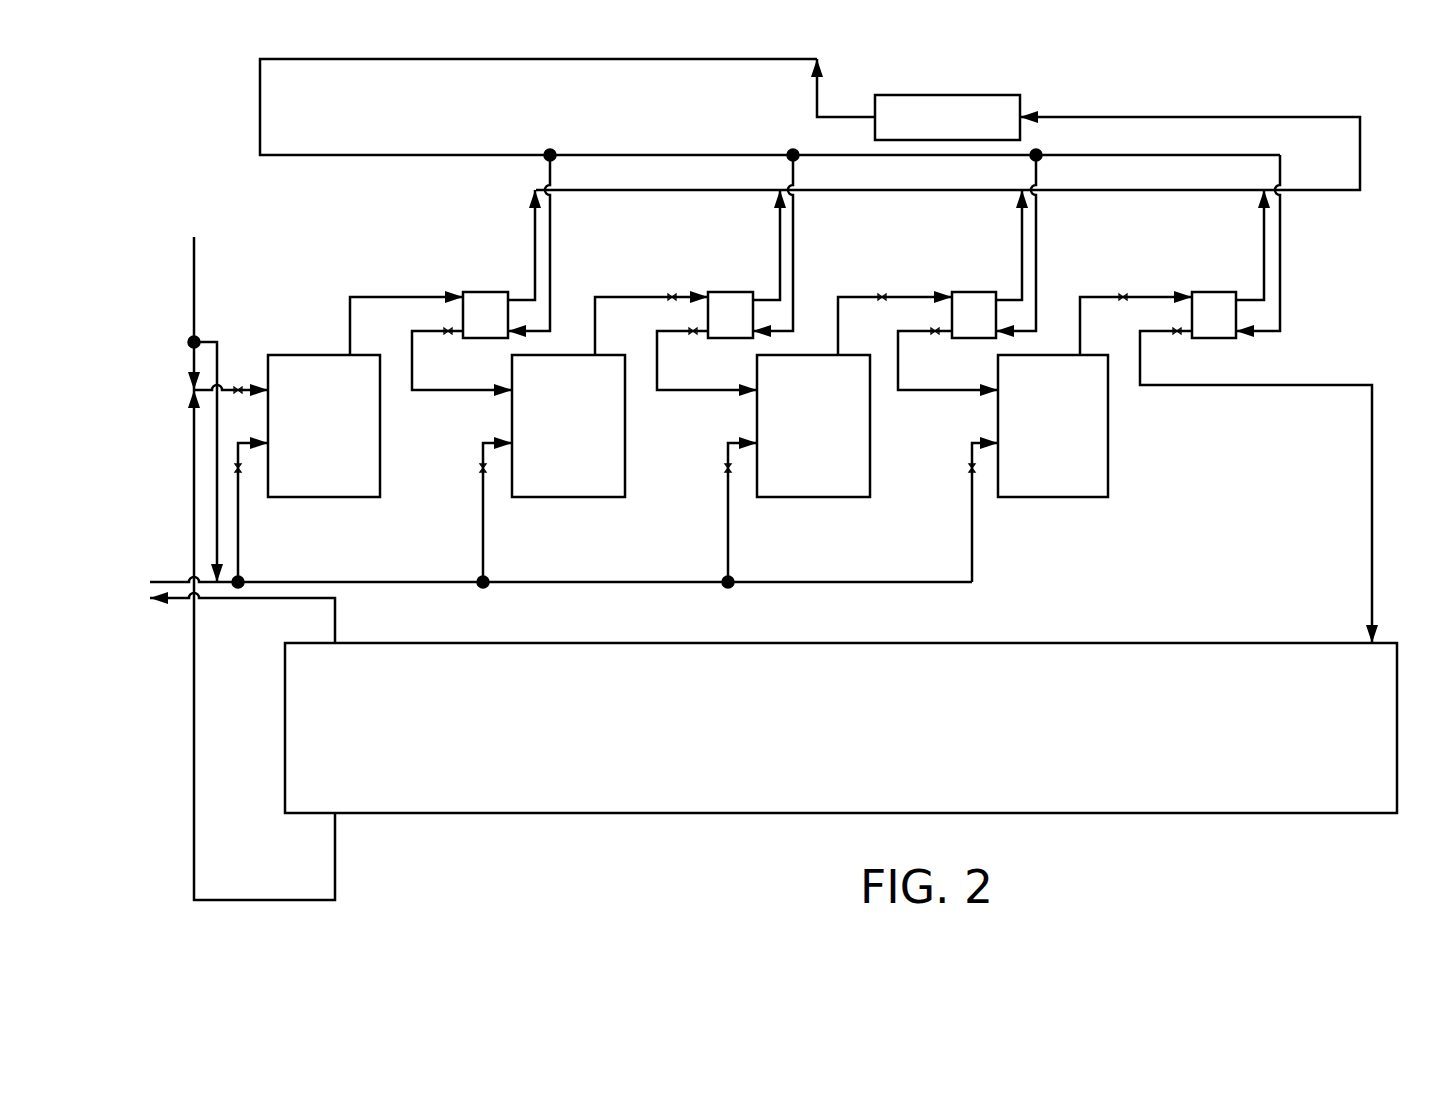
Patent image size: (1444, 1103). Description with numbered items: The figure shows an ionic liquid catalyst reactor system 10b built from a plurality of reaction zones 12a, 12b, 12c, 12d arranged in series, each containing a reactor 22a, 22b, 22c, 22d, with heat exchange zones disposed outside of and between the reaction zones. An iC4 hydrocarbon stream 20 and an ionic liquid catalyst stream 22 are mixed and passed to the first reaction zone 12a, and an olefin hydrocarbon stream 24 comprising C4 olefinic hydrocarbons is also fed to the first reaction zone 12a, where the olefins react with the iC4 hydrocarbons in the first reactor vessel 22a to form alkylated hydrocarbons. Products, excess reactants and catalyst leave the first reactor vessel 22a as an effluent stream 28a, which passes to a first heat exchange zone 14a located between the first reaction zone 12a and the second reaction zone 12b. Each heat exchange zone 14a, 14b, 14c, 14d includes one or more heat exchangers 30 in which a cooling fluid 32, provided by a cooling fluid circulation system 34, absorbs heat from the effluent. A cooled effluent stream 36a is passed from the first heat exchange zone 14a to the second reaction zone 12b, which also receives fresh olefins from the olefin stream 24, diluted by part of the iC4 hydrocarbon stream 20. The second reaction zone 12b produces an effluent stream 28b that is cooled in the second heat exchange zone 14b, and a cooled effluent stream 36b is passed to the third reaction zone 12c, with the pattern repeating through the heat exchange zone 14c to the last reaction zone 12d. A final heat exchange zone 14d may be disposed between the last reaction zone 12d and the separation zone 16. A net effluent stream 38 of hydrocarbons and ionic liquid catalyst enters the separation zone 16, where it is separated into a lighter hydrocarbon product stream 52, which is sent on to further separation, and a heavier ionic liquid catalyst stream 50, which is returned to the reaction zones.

The ionic liquid catalyst reactor system 10b is at (1245, 80).
The first reaction zone 12a is at (398, 467).
The second reaction zone 12b is at (635, 470).
The third reaction zone 12c is at (877, 442).
The last reaction zone 12d is at (1112, 423).
The first heat exchange zone 14a is at (467, 281).
The second heat exchange zone 14b is at (702, 278).
The heat exchange zone 14c is at (955, 283).
The final heat exchange zone 14d is at (1197, 283).
The separation zone 16 is at (708, 860).
The iC4 hydrocarbon stream 20 is at (196, 262).
The ionic liquid catalyst stream 22 is at (194, 463).
The first reactor vessel 22a is at (285, 355).
The reactor vessel 22b is at (538, 497).
The reactor vessel 22c is at (815, 497).
The reactor vessel 22d is at (1040, 497).
The olefin hydrocarbon stream 24 is at (153, 580).
The effluent stream 28a is at (350, 297).
The effluent stream 28b is at (595, 310).
The heat exchanger 30 is at (494, 292).
The cooling fluid 32 is at (798, 59).
The cooling fluid circulation system 34 is at (1003, 95).
The cooled effluent stream 36a is at (413, 363).
The cooled effluent stream 36b is at (659, 362).
The net effluent stream 38 is at (1372, 560).
The ionic liquid catalyst stream 50 is at (337, 860).
The hydrocarbon product stream 52 is at (337, 617).